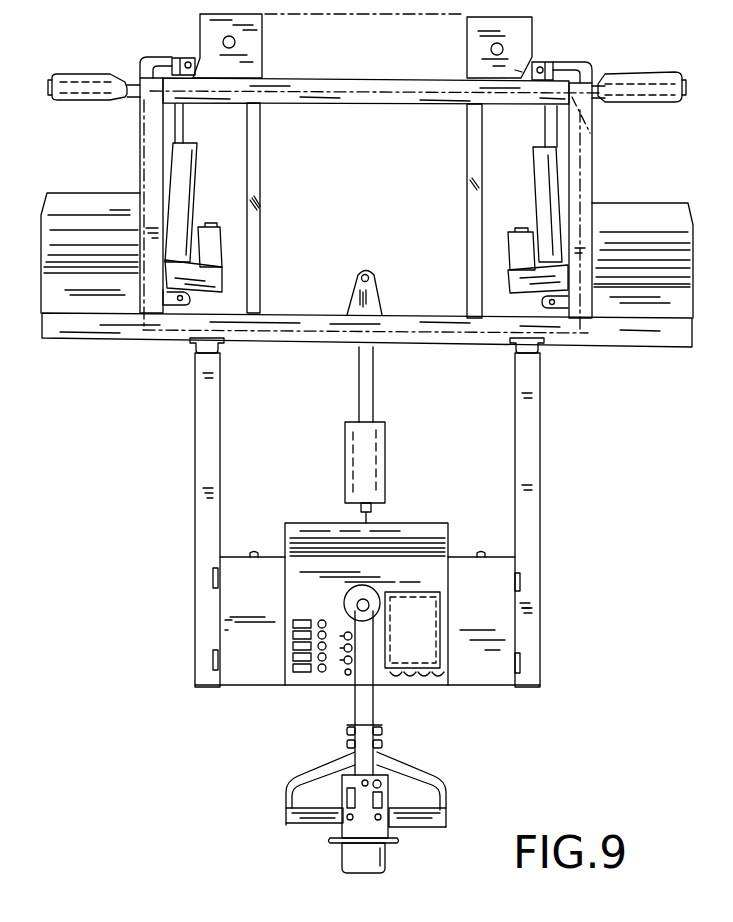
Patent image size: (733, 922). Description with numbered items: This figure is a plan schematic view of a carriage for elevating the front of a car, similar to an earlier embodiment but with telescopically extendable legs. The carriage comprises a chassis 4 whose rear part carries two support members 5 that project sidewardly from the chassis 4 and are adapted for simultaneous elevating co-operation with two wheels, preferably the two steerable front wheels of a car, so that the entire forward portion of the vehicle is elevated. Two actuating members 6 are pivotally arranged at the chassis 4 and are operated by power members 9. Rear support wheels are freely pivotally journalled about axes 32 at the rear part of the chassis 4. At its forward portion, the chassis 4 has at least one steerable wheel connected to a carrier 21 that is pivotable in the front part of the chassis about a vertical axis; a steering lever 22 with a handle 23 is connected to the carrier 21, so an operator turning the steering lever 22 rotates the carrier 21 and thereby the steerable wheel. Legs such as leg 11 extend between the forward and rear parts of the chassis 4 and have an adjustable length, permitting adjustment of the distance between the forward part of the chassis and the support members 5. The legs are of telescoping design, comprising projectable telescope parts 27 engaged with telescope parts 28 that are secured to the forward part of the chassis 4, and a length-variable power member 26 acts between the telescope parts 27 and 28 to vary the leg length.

The chassis 4 is at (557, 532).
The support member 5 is at (62, 207).
The actuating member 6 is at (82, 78).
The power member 9 is at (183, 167).
The leg 11 is at (542, 564).
The carrier 21 is at (355, 597).
The steering lever 22 is at (363, 700).
The handle 23 is at (313, 823).
The length-variable power member 26 is at (382, 468).
The projectable telescope part 27 is at (197, 348).
The telescope part 28 is at (200, 473).
The axis 32 is at (224, 40).